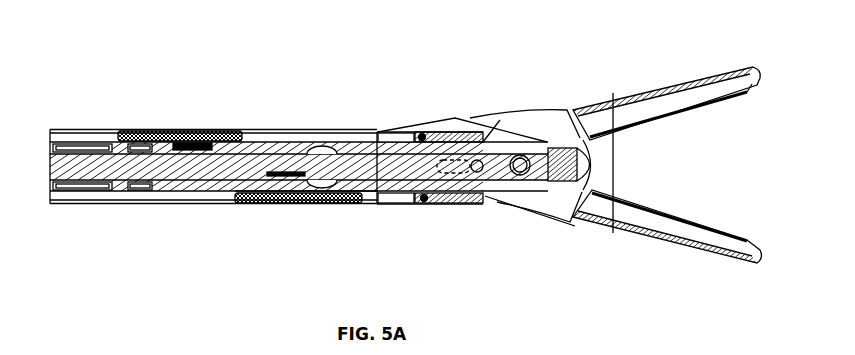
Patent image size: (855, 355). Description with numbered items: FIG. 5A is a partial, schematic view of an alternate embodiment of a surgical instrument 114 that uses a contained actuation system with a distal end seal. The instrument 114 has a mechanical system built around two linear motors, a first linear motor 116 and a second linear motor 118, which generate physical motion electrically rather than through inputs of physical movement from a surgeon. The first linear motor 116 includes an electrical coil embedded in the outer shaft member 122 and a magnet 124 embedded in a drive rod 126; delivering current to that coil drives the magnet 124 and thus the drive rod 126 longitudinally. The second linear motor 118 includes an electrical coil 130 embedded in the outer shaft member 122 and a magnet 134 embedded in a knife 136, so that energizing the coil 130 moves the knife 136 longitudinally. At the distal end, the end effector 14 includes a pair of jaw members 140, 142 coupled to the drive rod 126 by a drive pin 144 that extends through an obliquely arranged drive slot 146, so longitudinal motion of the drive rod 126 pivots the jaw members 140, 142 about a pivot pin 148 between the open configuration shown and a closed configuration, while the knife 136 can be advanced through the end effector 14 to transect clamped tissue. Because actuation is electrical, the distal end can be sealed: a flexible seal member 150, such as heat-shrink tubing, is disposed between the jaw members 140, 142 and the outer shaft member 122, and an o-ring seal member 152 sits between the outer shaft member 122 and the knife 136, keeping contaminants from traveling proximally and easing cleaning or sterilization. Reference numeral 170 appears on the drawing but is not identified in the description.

The surgical instrument 114 is at (141, 50).
The end effector 14 is at (630, 61).
The first linear motor 116 is at (310, 210).
The second linear motor 118 is at (207, 115).
The outer shaft member 122 is at (336, 133).
The magnet 124 is at (276, 178).
The drive rod 126 is at (123, 172).
The electrical coil 130 is at (241, 130).
The magnet 134 is at (182, 131).
The knife 136 is at (293, 142).
The jaw member 140 is at (719, 72).
The jaw member 142 is at (722, 256).
The drive pin 144 is at (477, 173).
The drive slot 146 is at (459, 128).
The pivot pin 148 is at (521, 176).
The flexible seal member 150 is at (614, 167).
The seal member 152 is at (424, 133).
The lower tube 170 is at (362, 205).